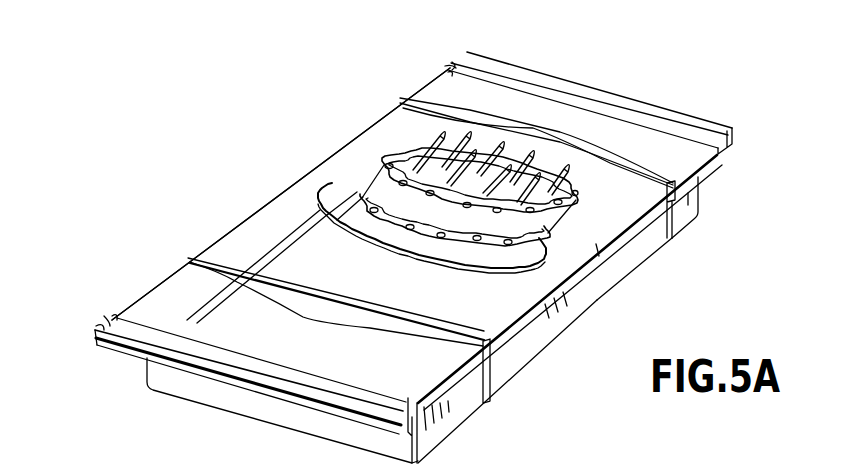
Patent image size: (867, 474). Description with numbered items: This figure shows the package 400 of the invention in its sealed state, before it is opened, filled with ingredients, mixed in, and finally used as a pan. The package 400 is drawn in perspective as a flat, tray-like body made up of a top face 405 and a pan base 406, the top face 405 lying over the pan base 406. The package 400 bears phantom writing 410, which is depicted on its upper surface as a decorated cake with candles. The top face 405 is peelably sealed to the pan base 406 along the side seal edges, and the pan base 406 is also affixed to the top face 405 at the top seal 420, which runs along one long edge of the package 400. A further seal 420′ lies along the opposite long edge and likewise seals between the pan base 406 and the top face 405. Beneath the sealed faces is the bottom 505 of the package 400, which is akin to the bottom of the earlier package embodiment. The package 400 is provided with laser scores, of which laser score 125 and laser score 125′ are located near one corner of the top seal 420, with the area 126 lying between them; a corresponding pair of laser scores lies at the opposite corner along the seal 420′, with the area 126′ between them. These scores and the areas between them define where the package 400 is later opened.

The package 400 is at (603, 325).
The top face 405 is at (587, 232).
The pan base 406 is at (547, 340).
The phantom writing 410 is at (392, 158).
The top seal 420 is at (615, 103).
The seal 420′ is at (283, 386).
The bottom 505 is at (233, 380).
The laser score 125 is at (448, 72).
The laser score 125′ is at (478, 30).
The area 126 is at (445, 66).
The area 126′ is at (106, 316).